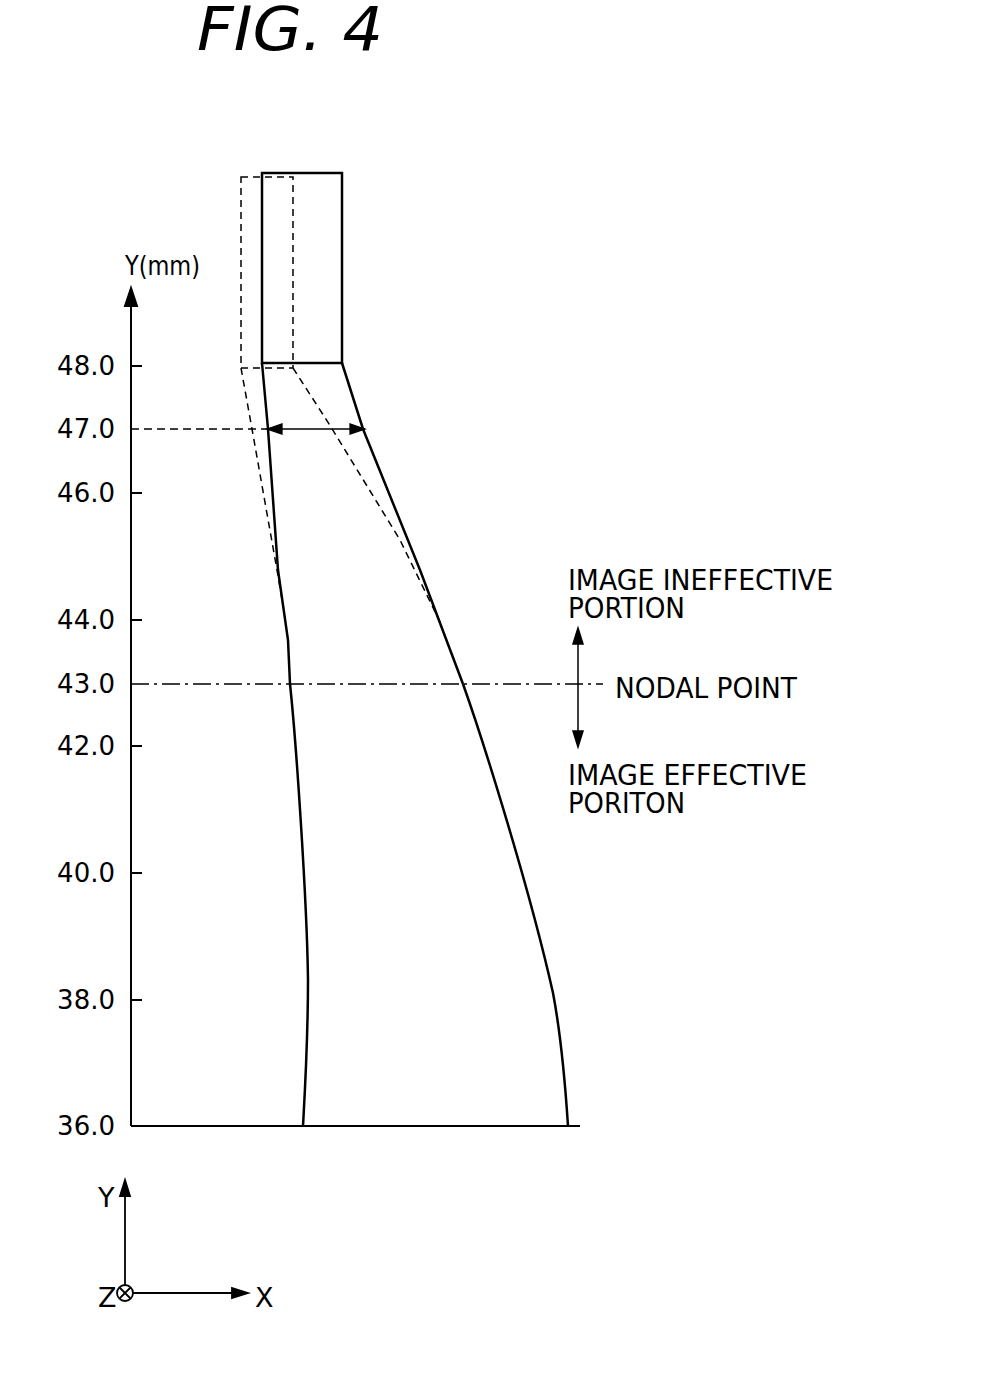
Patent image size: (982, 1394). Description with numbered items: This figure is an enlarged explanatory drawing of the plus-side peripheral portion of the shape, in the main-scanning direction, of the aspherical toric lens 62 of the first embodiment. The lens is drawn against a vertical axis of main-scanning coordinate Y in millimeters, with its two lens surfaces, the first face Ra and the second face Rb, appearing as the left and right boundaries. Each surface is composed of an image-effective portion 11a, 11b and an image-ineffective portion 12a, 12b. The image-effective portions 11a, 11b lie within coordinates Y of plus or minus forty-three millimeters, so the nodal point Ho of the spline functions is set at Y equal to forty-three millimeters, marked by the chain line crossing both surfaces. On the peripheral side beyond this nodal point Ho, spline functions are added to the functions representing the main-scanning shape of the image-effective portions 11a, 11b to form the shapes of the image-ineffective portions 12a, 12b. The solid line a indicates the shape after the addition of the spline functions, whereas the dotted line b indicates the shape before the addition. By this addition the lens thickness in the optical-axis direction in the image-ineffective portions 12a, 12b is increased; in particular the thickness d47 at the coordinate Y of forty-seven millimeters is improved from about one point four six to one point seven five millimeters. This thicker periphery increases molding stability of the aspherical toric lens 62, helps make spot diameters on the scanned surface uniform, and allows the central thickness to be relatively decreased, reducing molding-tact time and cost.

The solid line a is at (342, 310).
The dotted line b is at (293, 253).
The thickness at coordinate Y=47 mm d47 is at (312, 430).
The image-ineffective portion 12a is at (272, 533).
The image-ineffective portion 12b is at (410, 537).
The image-effective portion 11a is at (264, 905).
The image-effective portion 11b is at (543, 905).
The first face Ra is at (305, 990).
The second face Rb is at (553, 993).
The aspherical toric lens 62 is at (406, 744).
The nodal point Ho is at (465, 680).